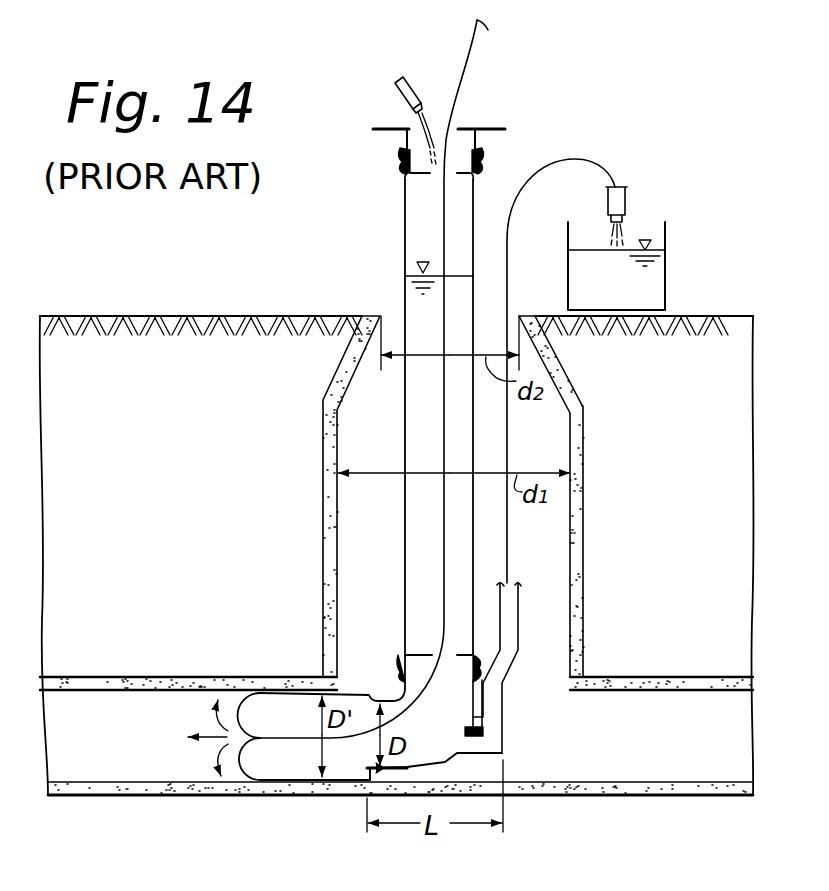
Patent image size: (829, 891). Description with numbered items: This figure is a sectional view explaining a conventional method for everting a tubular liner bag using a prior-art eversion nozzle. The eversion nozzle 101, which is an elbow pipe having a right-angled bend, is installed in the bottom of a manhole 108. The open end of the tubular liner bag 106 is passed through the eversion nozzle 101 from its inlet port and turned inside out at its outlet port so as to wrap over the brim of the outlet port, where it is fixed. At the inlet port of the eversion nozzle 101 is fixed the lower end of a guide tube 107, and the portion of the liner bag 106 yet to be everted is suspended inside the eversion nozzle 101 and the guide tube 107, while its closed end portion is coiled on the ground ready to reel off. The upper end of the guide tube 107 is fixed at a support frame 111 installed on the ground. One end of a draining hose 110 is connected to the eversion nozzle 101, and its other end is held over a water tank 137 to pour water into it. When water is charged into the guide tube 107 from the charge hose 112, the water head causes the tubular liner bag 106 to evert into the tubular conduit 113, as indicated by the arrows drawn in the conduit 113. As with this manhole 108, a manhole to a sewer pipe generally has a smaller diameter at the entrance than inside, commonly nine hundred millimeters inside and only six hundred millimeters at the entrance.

The eversion nozzle 101 is at (476, 718).
The tubular liner bag 106 is at (283, 742).
The guide tube 107 is at (407, 539).
The manhole 108 is at (337, 444).
The draining hose 110 is at (512, 603).
The support frame 111 is at (400, 146).
The charge hose 112 is at (398, 88).
The tubular conduit 113 is at (85, 693).
The water tank 137 is at (665, 290).